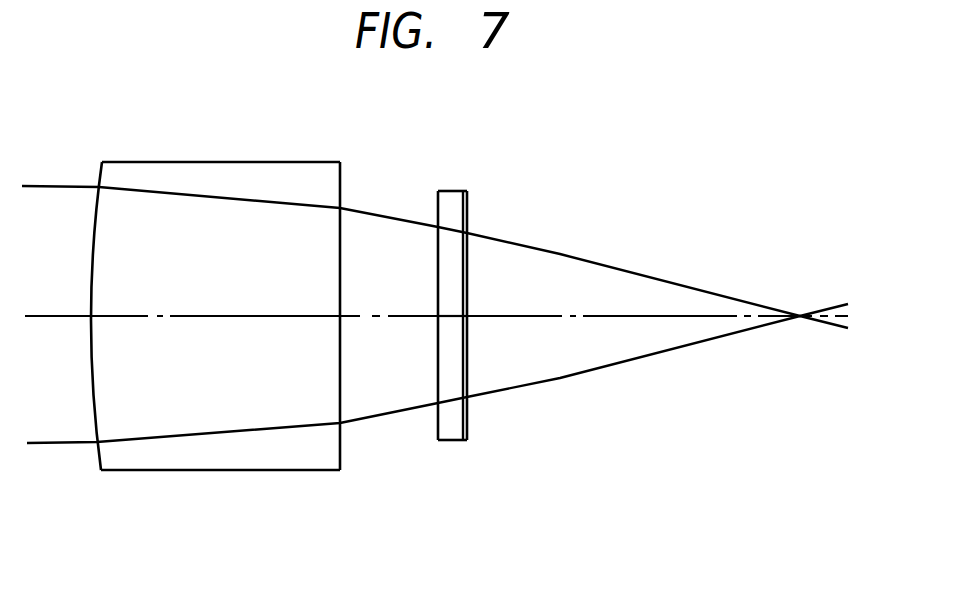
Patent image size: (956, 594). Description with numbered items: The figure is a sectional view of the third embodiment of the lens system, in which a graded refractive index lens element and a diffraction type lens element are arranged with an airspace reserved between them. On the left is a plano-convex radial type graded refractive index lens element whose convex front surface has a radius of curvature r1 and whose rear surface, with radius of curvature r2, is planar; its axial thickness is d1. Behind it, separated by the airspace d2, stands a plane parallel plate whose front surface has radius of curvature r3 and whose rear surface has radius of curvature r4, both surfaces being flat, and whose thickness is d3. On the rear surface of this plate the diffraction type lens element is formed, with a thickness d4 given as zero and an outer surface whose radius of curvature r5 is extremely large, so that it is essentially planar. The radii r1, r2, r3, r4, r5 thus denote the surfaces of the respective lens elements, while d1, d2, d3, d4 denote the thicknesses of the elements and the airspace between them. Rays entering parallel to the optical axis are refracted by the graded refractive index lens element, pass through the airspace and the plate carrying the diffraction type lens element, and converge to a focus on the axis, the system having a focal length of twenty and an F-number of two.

The radius of curvature of first surface r1 is at (96, 213).
The radius of curvature of second surface r2 is at (340, 208).
The radius of curvature of third surface r3 is at (438, 208).
The radius of curvature of fourth surface r4 is at (463, 200).
The radius of curvature of fifth surface r5 is at (467, 218).
The thickness of graded refractive index lens element d1 is at (193, 317).
The airspace d2 is at (388, 318).
The thickness of plane parallel plate d3 is at (452, 318).
The thickness of diffraction type lens element d4 is at (468, 320).